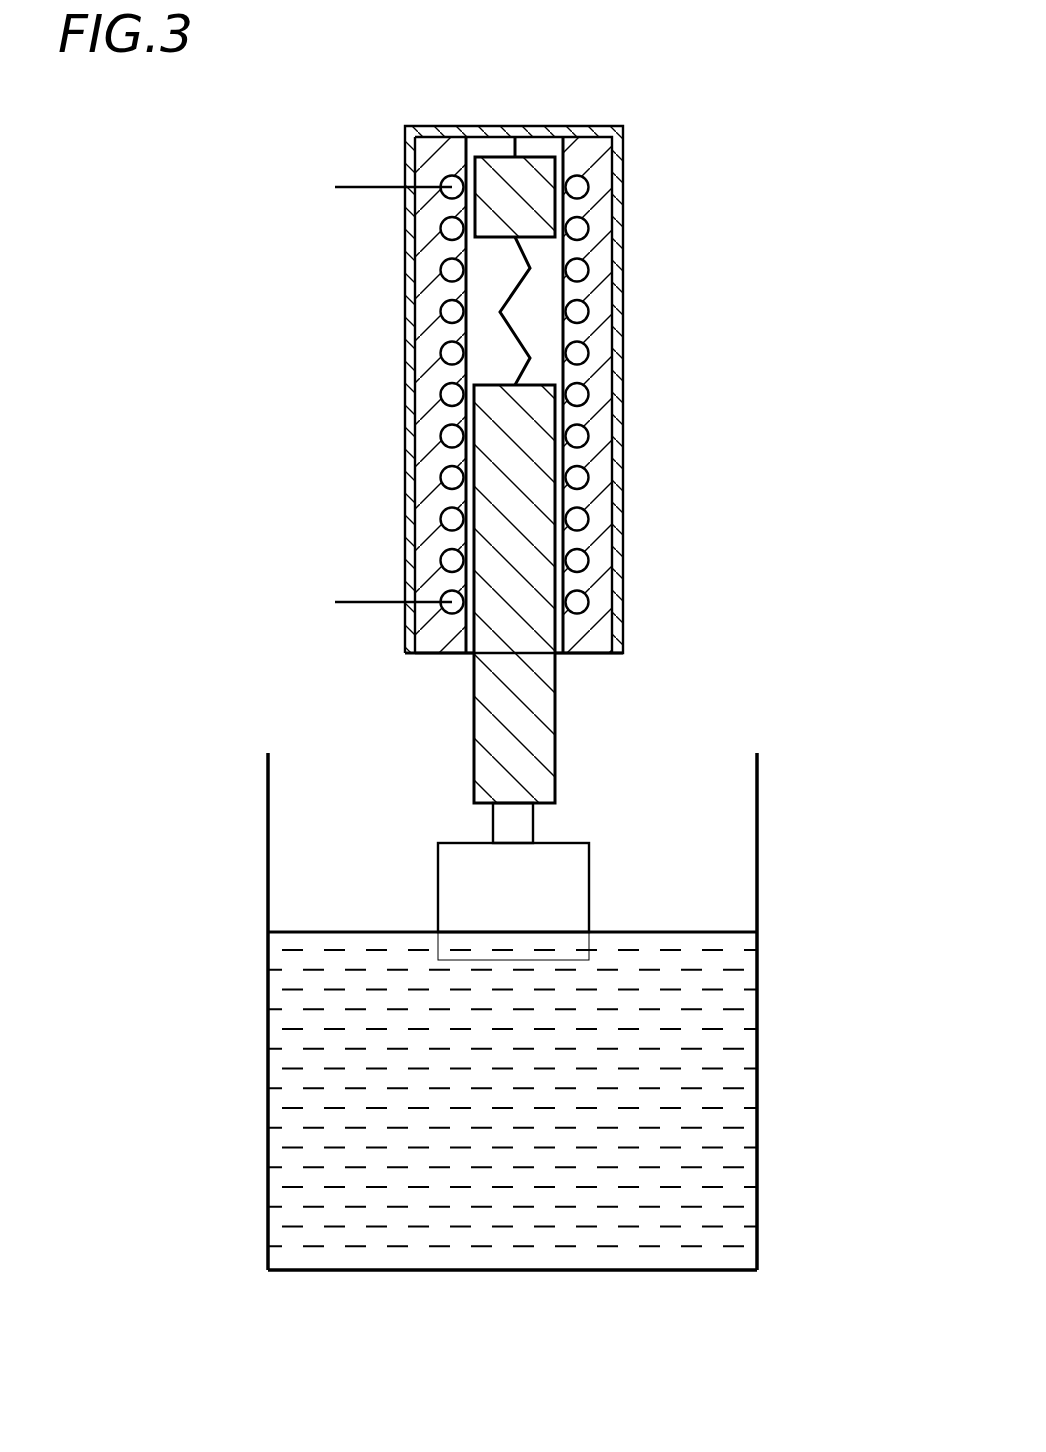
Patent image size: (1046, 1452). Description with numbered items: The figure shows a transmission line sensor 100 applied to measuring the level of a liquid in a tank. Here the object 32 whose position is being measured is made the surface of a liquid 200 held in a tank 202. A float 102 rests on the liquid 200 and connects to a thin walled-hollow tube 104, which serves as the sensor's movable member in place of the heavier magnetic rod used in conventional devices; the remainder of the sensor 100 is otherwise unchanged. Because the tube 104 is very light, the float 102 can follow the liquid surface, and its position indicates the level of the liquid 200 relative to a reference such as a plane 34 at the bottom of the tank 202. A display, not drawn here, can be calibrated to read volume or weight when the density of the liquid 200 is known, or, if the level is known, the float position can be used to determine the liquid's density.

The sensor 100 is at (612, 543).
The thin walled-hollow tube 104 is at (474, 722).
The float 102 is at (438, 868).
The liquid 200 is at (506, 1034).
The tank 202 is at (757, 863).
The object 32 is at (643, 932).
The plane 34 is at (735, 1268).